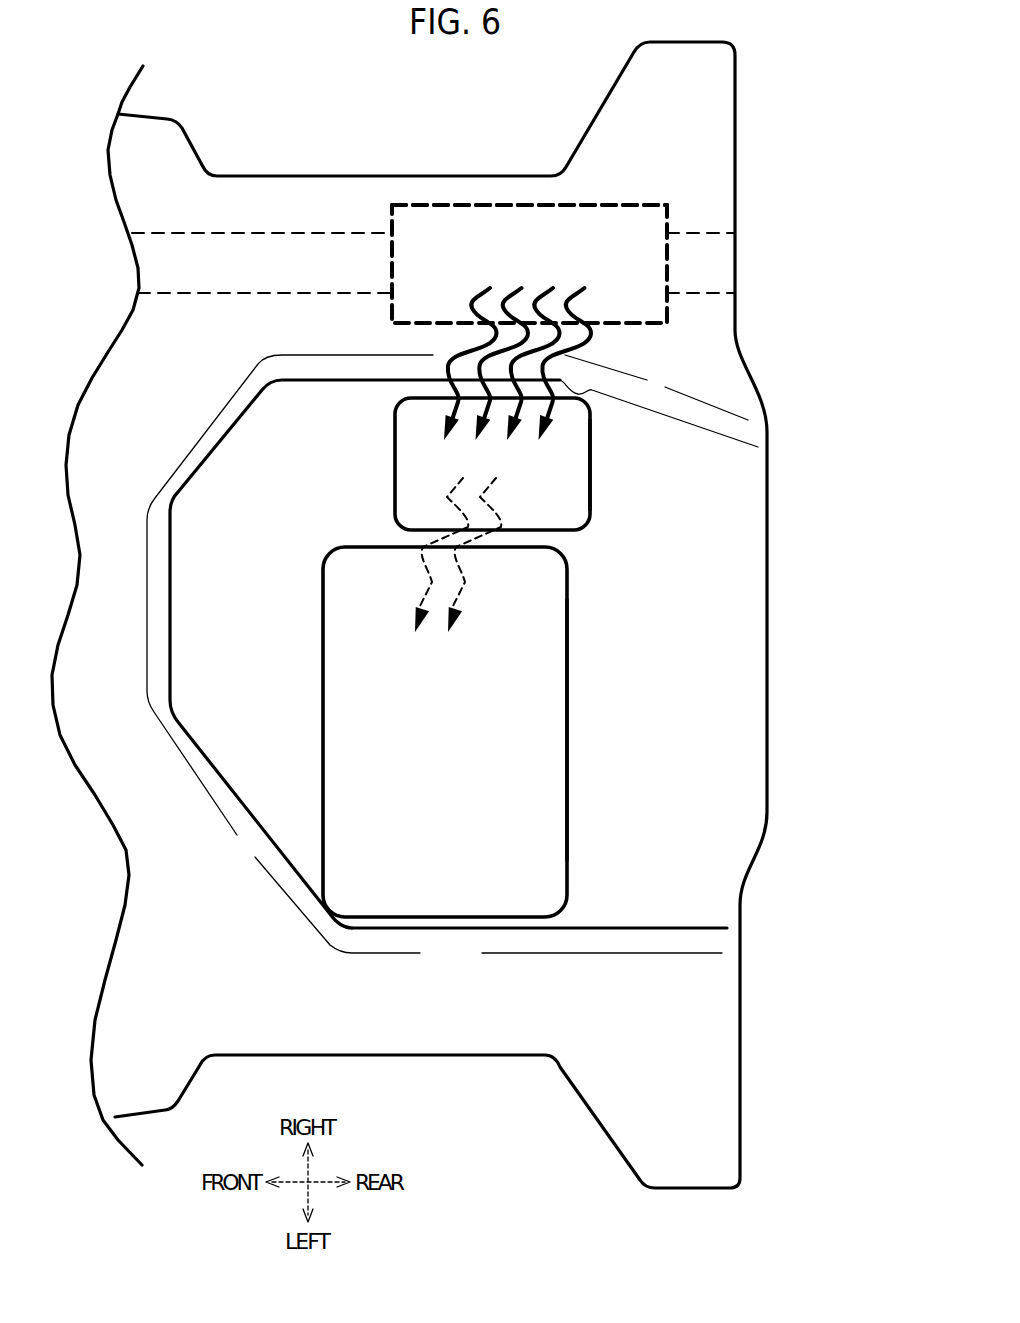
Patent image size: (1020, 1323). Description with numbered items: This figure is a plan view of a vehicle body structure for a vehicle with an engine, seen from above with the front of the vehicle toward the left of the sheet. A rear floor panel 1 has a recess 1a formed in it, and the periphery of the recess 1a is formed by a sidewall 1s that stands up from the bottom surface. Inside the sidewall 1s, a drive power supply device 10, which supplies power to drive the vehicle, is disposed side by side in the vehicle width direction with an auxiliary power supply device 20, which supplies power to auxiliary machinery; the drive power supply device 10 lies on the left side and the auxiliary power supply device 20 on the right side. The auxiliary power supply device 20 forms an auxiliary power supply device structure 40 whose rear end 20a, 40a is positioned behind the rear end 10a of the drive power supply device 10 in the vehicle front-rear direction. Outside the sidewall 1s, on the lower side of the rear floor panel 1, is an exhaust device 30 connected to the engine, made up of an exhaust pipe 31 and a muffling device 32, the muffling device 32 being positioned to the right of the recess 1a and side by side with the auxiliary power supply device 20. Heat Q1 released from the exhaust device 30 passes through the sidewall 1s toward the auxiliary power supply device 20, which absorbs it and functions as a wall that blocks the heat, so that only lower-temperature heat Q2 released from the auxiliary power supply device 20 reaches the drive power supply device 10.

The rear floor panel 1 is at (693, 352).
The recess 1a is at (690, 928).
The sidewall 1s is at (572, 390).
The drive power supply device 10 is at (584, 681).
The rear end of the drive power supply device 10a is at (572, 720).
The auxiliary power supply device 20 is at (565, 464).
The auxiliary power supply device structure 40 is at (608, 446).
The rear end of the auxiliary power supply device 20a is at (650, 465).
The rear end of the auxiliary power supply device structure 40a is at (595, 490).
The exhaust device 30 is at (645, 198).
The exhaust pipe 31 is at (285, 232).
The muffling device 32 is at (478, 205).
The heat released from the exhaust device Q1 is at (445, 409).
The heat released from the auxiliary power supply device Q2 is at (447, 497).